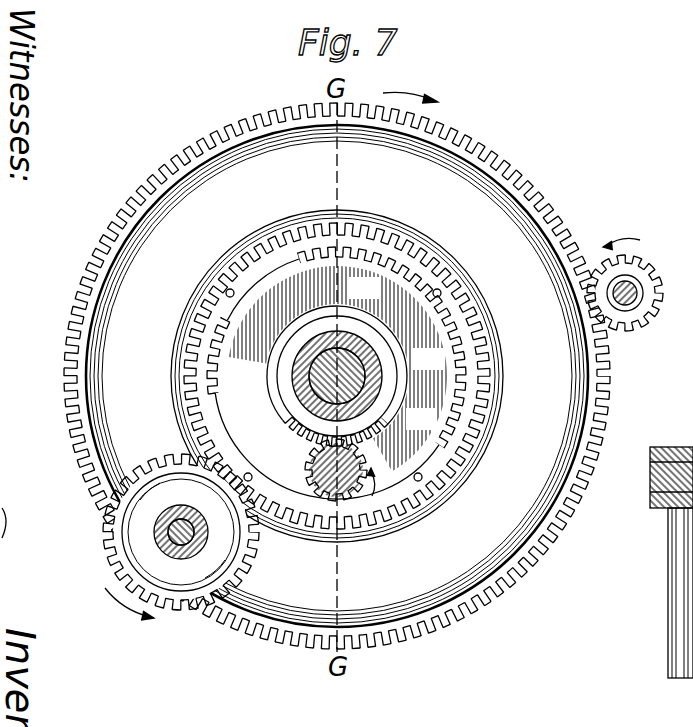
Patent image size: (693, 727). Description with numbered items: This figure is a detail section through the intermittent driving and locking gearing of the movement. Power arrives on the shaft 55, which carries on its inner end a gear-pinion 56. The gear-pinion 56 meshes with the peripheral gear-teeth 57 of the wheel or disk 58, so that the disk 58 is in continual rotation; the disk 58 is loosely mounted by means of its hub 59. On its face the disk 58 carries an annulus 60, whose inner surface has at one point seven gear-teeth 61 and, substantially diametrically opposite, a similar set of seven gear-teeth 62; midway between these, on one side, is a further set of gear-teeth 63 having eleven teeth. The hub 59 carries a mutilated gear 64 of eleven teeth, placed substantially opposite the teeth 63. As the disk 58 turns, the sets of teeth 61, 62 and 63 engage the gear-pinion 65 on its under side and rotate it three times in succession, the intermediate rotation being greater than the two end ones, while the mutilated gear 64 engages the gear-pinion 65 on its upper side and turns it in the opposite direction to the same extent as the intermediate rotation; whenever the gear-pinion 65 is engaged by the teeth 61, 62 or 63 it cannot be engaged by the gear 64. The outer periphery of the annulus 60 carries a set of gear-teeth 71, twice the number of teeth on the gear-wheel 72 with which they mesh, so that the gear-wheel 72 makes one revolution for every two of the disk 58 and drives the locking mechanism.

The shaft 55 is at (642, 293).
The gear-pinion 56 is at (648, 268).
The peripheral gear-teeth 57 is at (491, 160).
The wheel or disk 58 is at (337, 376).
The hub 59 is at (388, 394).
The annulus 60 is at (279, 245).
The gear-teeth 61 is at (222, 363).
The gear-teeth 62 is at (455, 369).
The gear-teeth 63 is at (357, 253).
The mutilated gear 64 is at (290, 427).
The gear-pinion 65 is at (310, 465).
The gear-teeth 71 is at (237, 255).
The gear-wheel 72 is at (181, 537).